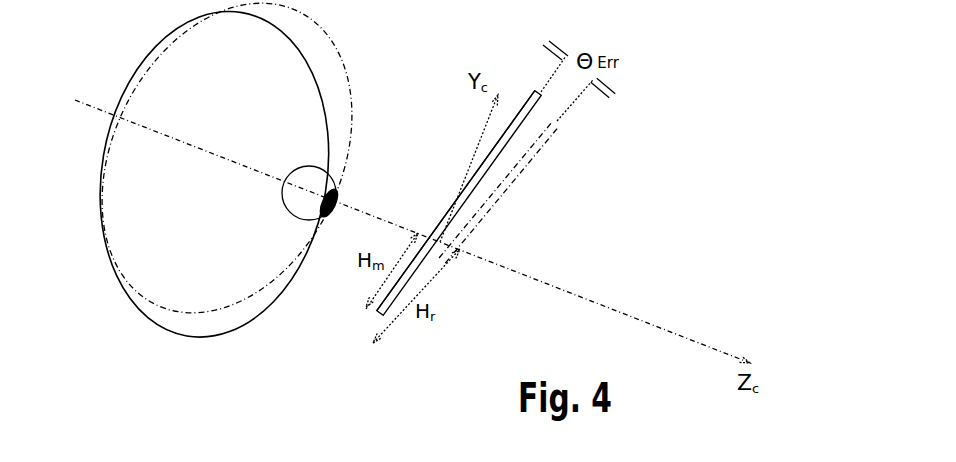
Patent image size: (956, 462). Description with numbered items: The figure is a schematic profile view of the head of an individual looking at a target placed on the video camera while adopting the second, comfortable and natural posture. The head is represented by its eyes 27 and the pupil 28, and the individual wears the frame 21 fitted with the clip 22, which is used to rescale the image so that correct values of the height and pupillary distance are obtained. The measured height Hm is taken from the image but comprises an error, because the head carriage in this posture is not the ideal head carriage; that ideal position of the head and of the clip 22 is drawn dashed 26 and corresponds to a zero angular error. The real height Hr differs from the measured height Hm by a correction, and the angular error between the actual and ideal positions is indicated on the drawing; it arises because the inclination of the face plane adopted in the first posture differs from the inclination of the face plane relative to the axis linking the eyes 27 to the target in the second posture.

The frame 21 is at (529, 96).
The clip 22 is at (491, 153).
The dashed position of the head and clip 26 is at (507, 173).
The eyes 27 is at (307, 178).
The pupil 28 is at (335, 209).